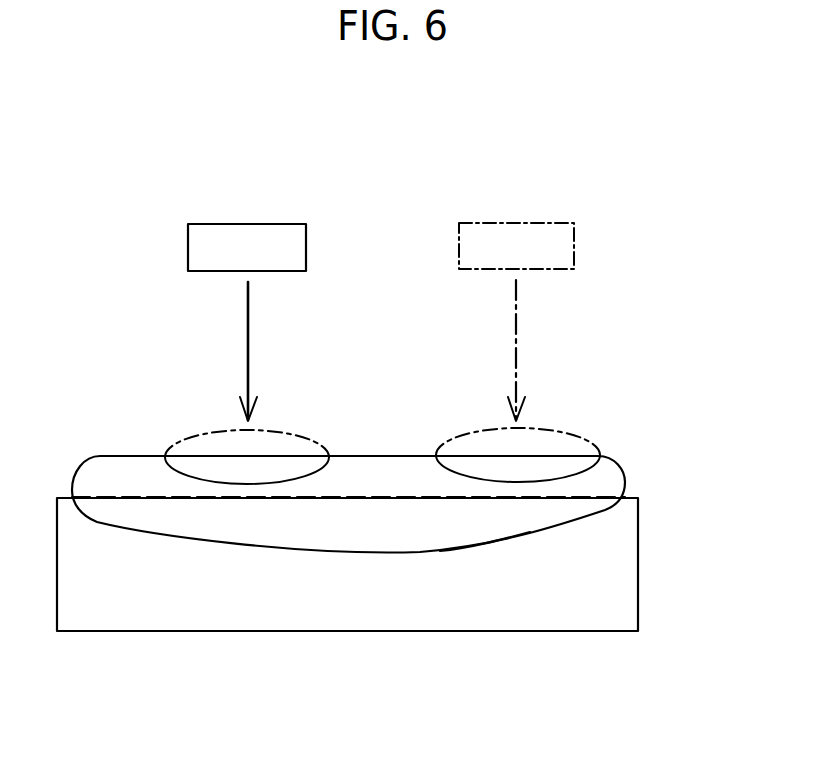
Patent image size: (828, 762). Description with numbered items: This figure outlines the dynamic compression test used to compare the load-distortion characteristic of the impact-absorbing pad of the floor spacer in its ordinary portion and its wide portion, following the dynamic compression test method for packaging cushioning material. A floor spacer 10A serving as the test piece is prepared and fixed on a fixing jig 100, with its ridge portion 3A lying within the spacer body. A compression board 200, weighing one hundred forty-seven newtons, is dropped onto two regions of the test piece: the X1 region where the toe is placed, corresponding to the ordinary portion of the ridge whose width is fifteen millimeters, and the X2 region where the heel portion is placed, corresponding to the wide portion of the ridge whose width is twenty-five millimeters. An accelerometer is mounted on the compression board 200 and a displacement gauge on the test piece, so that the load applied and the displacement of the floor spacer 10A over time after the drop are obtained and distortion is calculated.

The compression board 200 is at (275, 232).
The X1 region X1 is at (212, 432).
The X2 region X2 is at (548, 432).
The floor spacer 10A is at (607, 481).
The lower surface portion of film 3A is at (468, 522).
The fixing jig 100 is at (190, 595).